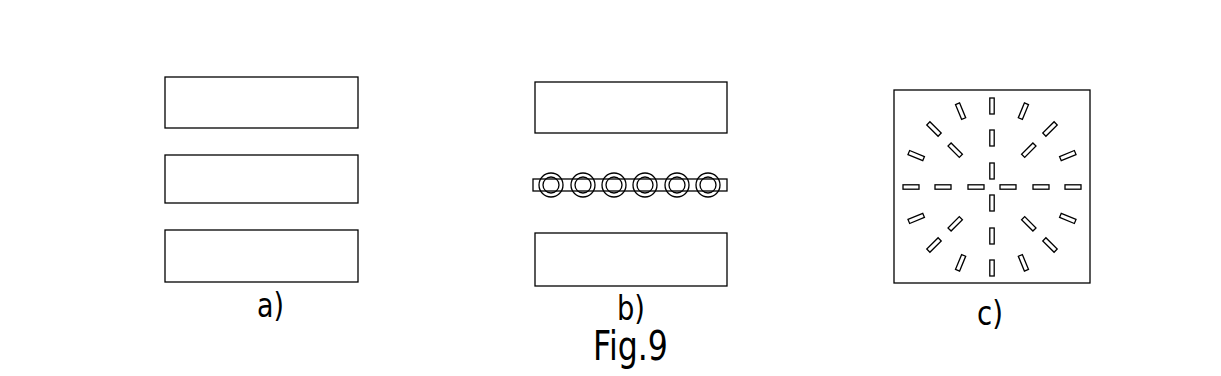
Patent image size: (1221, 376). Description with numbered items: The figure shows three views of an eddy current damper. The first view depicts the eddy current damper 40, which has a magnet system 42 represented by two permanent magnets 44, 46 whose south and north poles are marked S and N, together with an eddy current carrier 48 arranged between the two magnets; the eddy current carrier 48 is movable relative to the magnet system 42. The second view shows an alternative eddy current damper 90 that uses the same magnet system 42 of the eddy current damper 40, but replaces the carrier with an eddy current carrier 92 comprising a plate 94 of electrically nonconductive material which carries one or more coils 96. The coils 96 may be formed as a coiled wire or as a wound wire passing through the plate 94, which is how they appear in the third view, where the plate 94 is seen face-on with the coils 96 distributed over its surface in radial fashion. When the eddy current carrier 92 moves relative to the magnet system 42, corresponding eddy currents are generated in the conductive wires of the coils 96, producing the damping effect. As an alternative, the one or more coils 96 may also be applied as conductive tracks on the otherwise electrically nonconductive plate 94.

The eddy current damper 40 is at (434, 143).
The magnet system 42 is at (360, 73).
The permanent magnet 44 is at (176, 91).
The permanent magnet 46 is at (174, 258).
The eddy current carrier 48 is at (347, 182).
The eddy current damper 90 is at (627, 64).
The eddy current carrier 92 is at (846, 165).
The plate 94 is at (560, 188).
The coils 96 is at (548, 176).